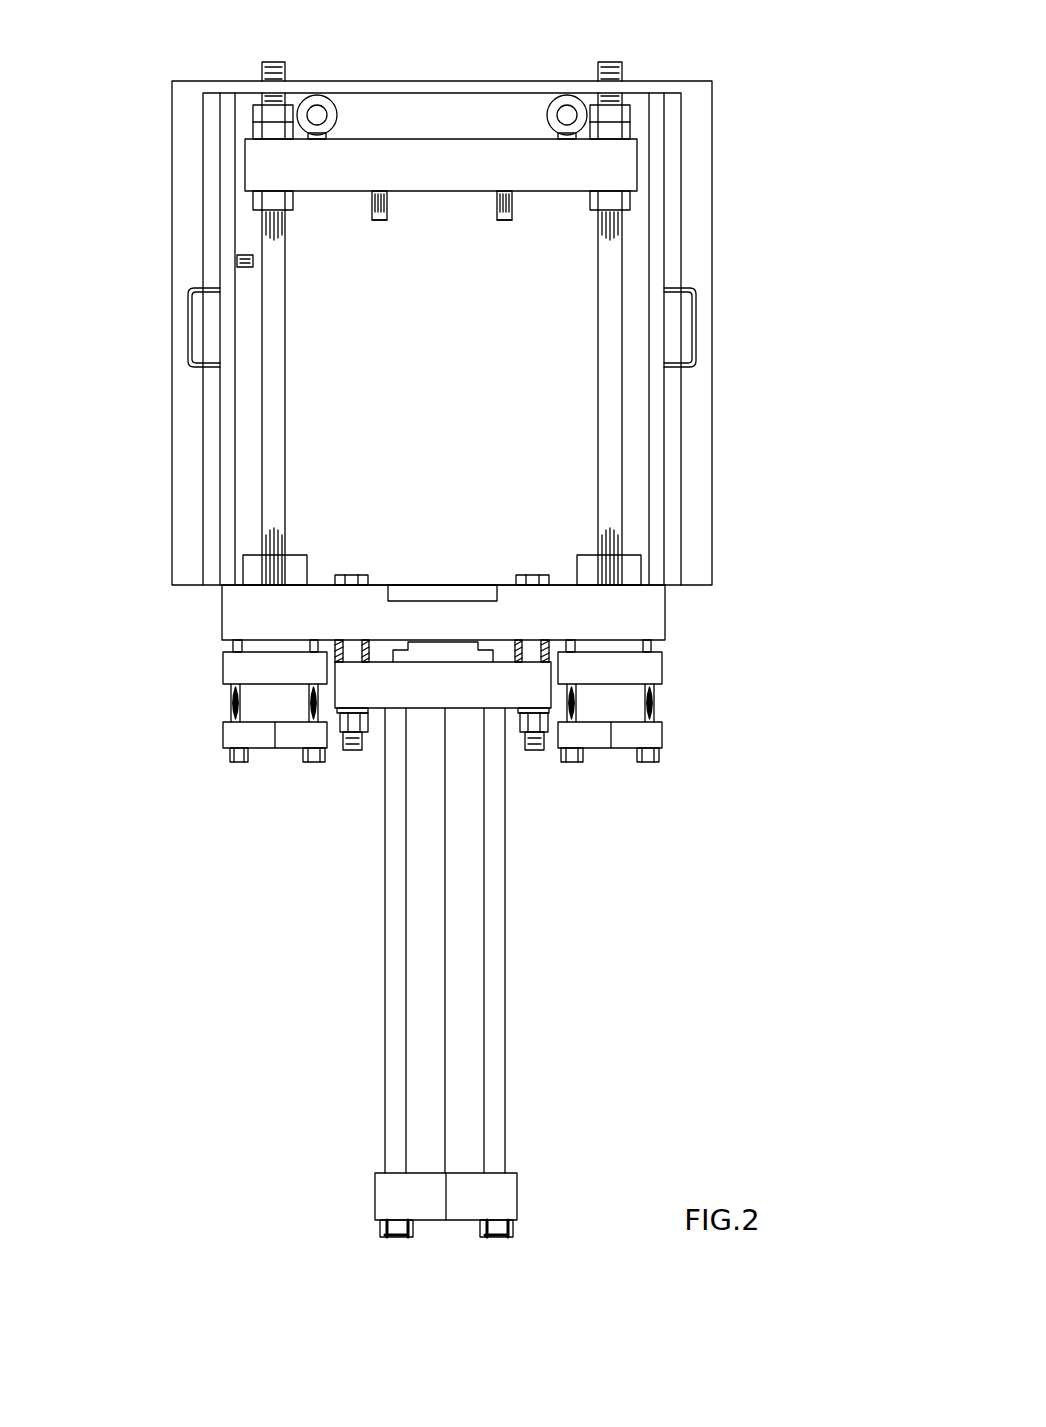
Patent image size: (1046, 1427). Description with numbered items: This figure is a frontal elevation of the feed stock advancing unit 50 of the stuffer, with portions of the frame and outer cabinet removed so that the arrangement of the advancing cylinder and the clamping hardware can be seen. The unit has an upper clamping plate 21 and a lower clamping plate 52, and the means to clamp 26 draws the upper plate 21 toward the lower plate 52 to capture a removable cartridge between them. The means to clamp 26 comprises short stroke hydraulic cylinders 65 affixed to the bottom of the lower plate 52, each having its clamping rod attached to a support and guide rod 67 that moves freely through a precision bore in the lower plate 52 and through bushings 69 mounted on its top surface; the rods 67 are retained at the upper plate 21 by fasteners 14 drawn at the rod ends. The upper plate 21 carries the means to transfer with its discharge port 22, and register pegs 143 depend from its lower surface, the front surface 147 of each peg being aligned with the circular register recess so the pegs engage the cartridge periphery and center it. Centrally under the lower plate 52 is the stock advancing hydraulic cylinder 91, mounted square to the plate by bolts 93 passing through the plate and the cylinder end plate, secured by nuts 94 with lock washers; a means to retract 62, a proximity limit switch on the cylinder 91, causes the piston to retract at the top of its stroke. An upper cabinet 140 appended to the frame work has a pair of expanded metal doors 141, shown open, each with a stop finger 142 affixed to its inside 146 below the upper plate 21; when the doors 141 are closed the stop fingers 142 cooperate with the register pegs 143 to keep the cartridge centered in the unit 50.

The nuts 14 is at (630, 197).
The upper clamping plate 21 is at (493, 157).
The discharge port 22 is at (435, 138).
The means to clamp 26 is at (737, 408).
The feed stock advancing unit 50 is at (567, 975).
The lower clamping plate 52 is at (668, 608).
The means to retract 62 is at (360, 1058).
The cylinders 65 is at (633, 728).
The support and guide rod 67 is at (612, 273).
The bushings 69 is at (643, 550).
The stock advancing hydraulic cylinder 91 is at (465, 920).
The bolts 93 is at (536, 748).
The nuts 94 is at (367, 728).
The upper cabinet 140 is at (185, 199).
The doors 141 is at (227, 320).
The stop finger 142 is at (253, 261).
The register pegs 143 is at (372, 220).
The inside 146 is at (237, 384).
The front surface 147 is at (387, 207).